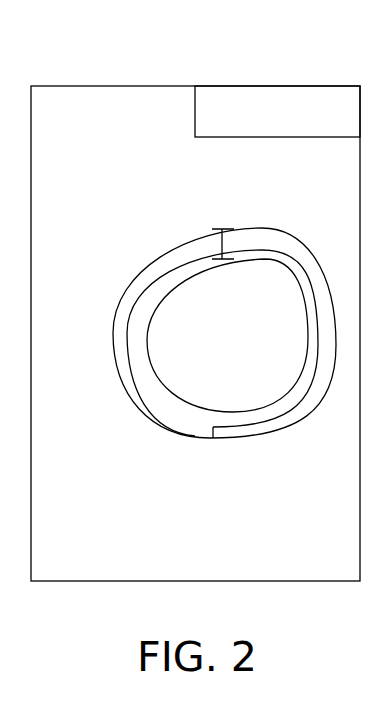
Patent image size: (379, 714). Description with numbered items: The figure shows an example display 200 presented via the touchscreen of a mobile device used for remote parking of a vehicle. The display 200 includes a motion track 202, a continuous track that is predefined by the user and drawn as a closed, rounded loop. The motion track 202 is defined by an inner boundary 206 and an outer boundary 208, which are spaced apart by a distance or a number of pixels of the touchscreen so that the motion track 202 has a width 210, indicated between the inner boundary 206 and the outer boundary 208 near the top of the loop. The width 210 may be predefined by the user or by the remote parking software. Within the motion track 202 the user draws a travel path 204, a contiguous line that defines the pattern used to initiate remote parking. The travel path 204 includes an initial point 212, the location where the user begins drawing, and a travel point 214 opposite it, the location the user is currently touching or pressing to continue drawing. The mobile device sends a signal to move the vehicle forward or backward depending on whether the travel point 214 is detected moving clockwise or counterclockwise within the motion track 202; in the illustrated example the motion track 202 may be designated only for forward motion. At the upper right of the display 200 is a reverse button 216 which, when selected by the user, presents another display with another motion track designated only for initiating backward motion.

The display 200 is at (97, 85).
The reverse button 216 is at (277, 85).
The motion track 202 is at (198, 361).
The travel path 204 is at (282, 415).
The inner boundary 206 is at (157, 375).
The outer boundary 208 is at (182, 434).
The width 210 is at (221, 246).
The initial point 212 is at (215, 438).
The travel point 214 is at (140, 384).